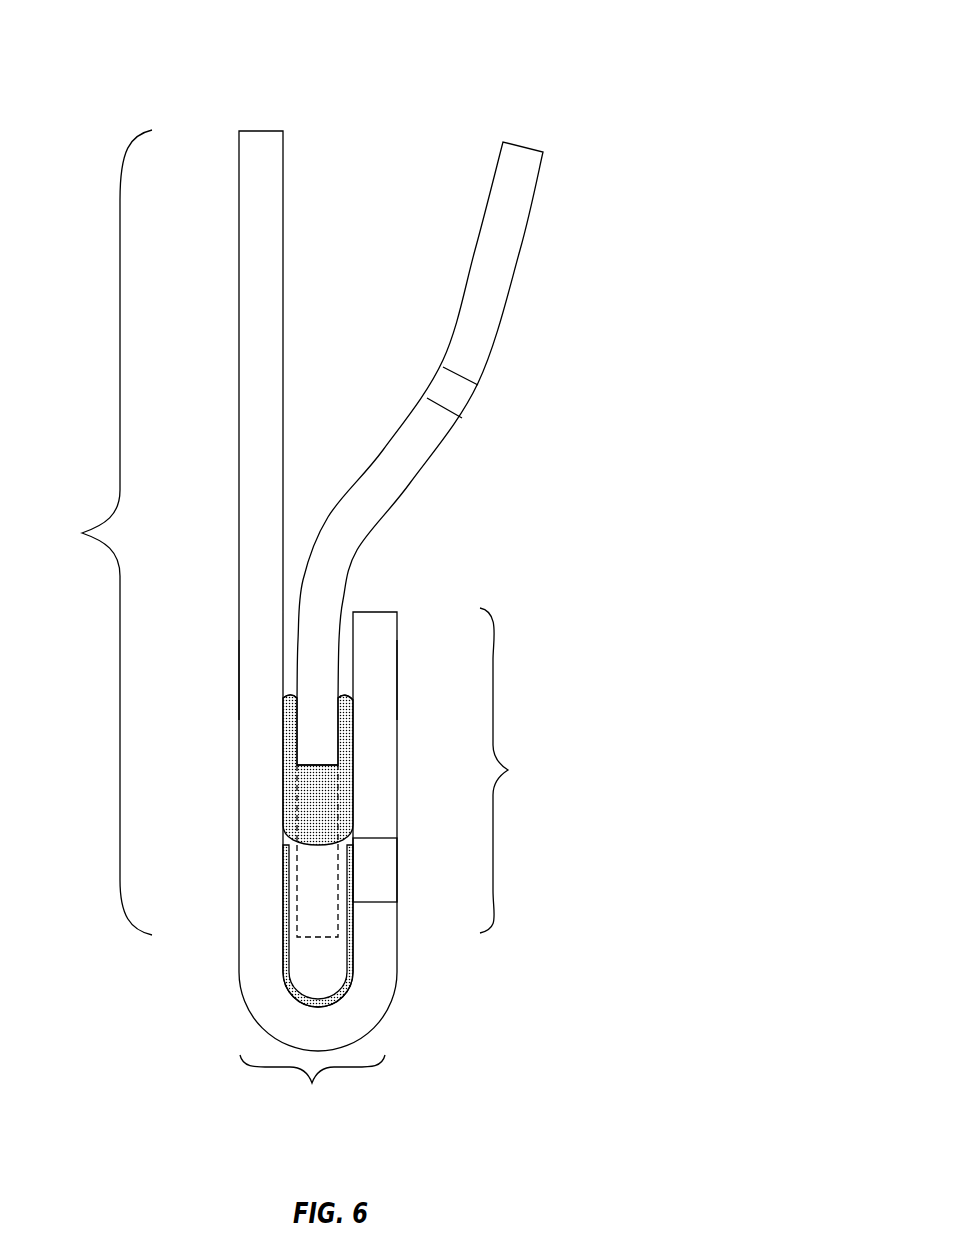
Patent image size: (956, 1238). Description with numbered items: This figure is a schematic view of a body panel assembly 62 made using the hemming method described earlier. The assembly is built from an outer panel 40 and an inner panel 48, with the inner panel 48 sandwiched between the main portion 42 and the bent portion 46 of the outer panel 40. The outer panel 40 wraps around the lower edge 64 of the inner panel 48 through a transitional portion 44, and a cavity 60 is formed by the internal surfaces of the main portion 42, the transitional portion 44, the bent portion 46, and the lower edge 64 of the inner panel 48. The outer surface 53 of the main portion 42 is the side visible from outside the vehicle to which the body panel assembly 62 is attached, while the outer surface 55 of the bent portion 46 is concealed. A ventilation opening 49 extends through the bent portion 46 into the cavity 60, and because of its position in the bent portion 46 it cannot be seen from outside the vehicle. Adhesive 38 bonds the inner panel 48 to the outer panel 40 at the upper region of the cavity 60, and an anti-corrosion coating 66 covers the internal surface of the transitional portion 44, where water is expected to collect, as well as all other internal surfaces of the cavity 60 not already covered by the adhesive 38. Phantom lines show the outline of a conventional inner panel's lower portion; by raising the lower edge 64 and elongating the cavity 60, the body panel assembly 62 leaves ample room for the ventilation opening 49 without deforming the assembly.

The body panel assembly 62 is at (547, 42).
The outer panel 40 is at (228, 224).
The main portion 42 is at (239, 610).
The transitional portion 44 is at (312, 1088).
The bent portion 46 is at (513, 770).
The inner panel 48 is at (530, 210).
The outer surface of main portion 53 is at (239, 693).
The outer surface of bent portion 55 is at (397, 668).
The adhesive 38 is at (283, 698).
The lower edge 64 is at (333, 763).
The cavity 60 is at (323, 878).
The ventilation opening 49 is at (388, 877).
The anti-corrosion coating 66 is at (302, 969).